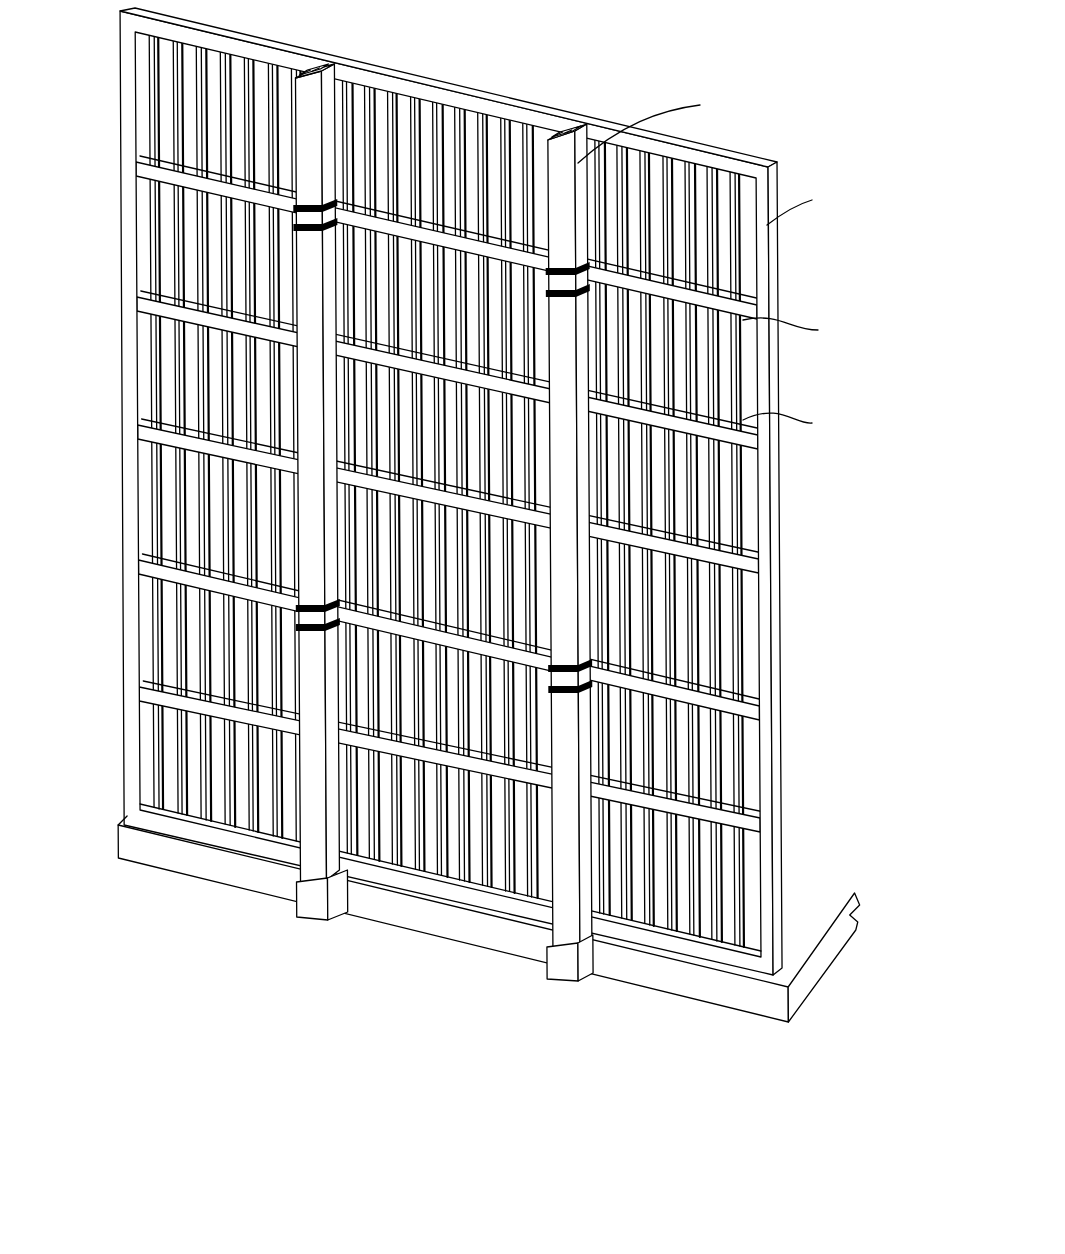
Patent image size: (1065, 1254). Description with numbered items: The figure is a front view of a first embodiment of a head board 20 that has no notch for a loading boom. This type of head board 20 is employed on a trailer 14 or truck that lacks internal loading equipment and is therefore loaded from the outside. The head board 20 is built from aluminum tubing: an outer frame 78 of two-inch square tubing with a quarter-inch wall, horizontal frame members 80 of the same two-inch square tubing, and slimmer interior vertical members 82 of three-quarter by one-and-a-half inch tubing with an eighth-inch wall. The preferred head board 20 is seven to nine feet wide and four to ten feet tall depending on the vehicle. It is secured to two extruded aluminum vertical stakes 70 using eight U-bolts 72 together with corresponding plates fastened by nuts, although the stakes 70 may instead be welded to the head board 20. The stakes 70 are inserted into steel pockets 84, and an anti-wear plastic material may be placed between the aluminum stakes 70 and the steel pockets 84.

The head board 20 is at (480, 74).
The trailer 14 is at (457, 942).
The stake 70 is at (590, 119).
The U-bolt 72 is at (563, 310).
The outer frame 78 is at (778, 279).
The horizontal frame member 80 is at (163, 304).
The interior vertical member 82 is at (165, 122).
The steel pocket 84 is at (296, 914).